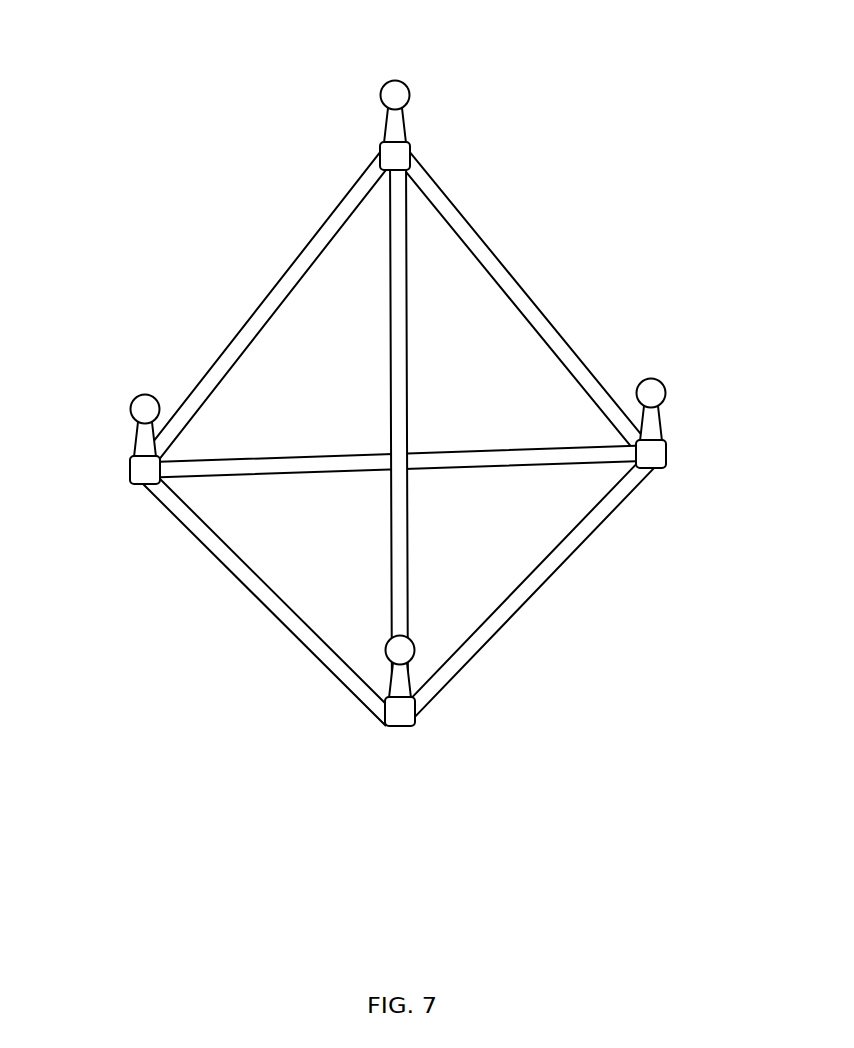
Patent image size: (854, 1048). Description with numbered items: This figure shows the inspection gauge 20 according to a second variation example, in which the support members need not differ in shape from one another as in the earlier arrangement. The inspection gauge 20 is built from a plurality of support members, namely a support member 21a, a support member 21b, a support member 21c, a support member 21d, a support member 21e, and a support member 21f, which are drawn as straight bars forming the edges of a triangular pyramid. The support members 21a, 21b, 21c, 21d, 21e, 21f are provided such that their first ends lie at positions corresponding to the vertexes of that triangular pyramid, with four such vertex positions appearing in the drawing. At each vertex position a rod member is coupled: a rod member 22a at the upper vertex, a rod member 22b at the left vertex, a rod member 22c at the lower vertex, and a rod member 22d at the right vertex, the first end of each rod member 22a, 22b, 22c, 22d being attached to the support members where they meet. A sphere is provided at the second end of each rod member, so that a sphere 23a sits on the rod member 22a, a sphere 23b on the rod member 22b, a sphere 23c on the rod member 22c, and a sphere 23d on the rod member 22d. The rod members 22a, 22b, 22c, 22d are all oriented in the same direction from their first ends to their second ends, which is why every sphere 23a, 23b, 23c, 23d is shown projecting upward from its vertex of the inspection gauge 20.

The inspection gauge 20 is at (156, 103).
The support member 21a is at (302, 250).
The support member 21b is at (236, 550).
The support member 21c is at (546, 560).
The support member 21d is at (496, 252).
The support member 21e is at (406, 334).
The support member 21f is at (440, 452).
The rod member 22a is at (406, 125).
The rod member 22b is at (133, 445).
The rod member 22c is at (390, 727).
The rod member 22d is at (665, 430).
The sphere 23a is at (410, 88).
The sphere 23b is at (131, 410).
The sphere 23c is at (408, 640).
The sphere 23d is at (664, 389).